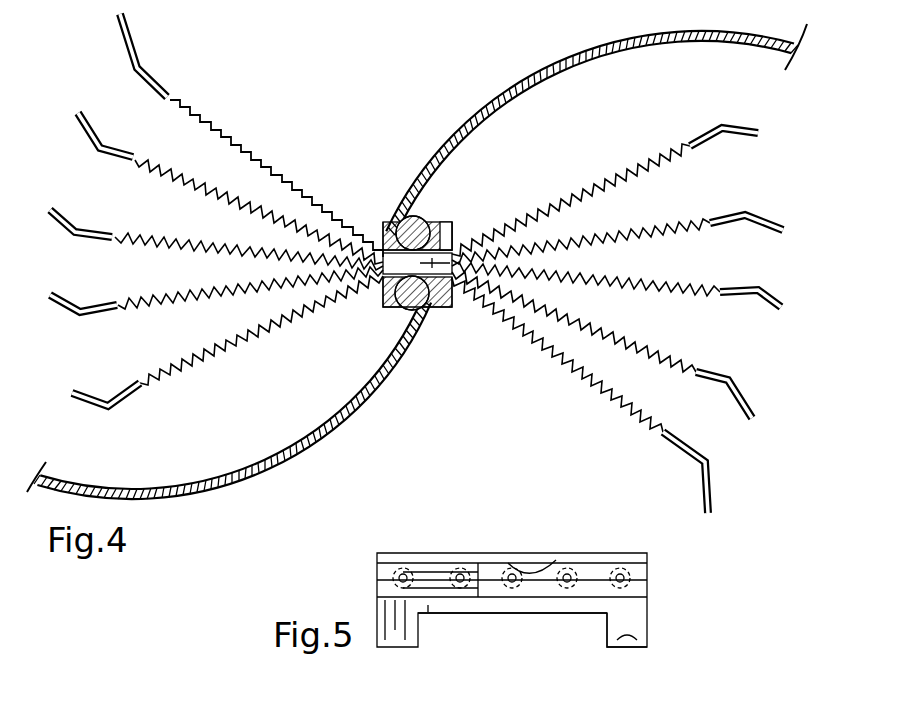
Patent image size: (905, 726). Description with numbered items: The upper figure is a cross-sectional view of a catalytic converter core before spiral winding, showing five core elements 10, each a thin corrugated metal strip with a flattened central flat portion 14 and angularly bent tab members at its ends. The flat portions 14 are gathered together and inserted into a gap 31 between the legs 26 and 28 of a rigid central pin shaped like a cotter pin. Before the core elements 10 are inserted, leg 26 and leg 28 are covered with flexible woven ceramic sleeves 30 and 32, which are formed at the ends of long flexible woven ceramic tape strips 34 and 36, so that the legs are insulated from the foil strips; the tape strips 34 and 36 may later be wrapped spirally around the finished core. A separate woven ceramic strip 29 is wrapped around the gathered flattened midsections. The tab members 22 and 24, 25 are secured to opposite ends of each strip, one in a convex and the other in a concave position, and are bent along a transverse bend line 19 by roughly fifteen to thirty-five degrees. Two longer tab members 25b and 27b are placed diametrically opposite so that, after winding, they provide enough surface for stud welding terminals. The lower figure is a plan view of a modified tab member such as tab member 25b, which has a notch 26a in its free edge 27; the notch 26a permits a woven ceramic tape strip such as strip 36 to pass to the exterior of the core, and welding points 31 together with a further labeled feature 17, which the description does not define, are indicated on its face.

In FIG. 4, the core element 10 is at (55, 312).
In FIG. 4, the flat portion 14 is at (452, 270).
In FIG. 4, the contact wire 17 is at (172, 97).
In FIG. 5, the contact wire 17 is at (512, 570).
In FIG. 5, the bend line 19 is at (477, 563).
In FIG. 4, the tab member 22 is at (737, 128).
In FIG. 4, the tab member 24 is at (110, 148).
In FIG. 5, the tab member 25 is at (622, 598).
In FIG. 4, the tab member 25b is at (135, 68).
In FIG. 4, the leg 26 is at (397, 224).
In FIG. 5, the notch 26a is at (457, 633).
In FIG. 5, the free edge 27 is at (612, 648).
In FIG. 4, the tab member 27b is at (703, 492).
In FIG. 4, the leg 28 is at (423, 305).
In FIG. 4, the woven ceramic strip 29 is at (432, 293).
In FIG. 4, the flexible woven ceramic sleeve 30 is at (387, 232).
In FIG. 4, the gap 31 is at (425, 225).
In FIG. 5, the gap 31 is at (622, 568).
In FIG. 4, the flexible woven ceramic sleeve 32 is at (402, 350).
In FIG. 4, the woven ceramic tape strip 34 is at (560, 64).
In FIG. 4, the woven ceramic tape strip 36 is at (230, 477).